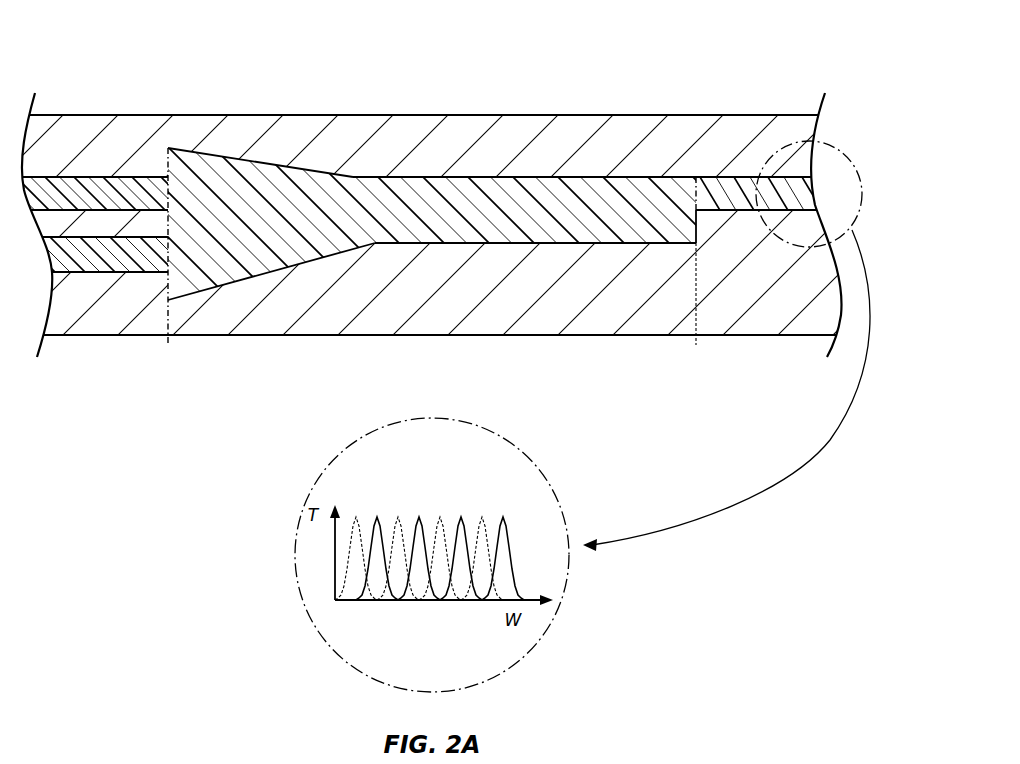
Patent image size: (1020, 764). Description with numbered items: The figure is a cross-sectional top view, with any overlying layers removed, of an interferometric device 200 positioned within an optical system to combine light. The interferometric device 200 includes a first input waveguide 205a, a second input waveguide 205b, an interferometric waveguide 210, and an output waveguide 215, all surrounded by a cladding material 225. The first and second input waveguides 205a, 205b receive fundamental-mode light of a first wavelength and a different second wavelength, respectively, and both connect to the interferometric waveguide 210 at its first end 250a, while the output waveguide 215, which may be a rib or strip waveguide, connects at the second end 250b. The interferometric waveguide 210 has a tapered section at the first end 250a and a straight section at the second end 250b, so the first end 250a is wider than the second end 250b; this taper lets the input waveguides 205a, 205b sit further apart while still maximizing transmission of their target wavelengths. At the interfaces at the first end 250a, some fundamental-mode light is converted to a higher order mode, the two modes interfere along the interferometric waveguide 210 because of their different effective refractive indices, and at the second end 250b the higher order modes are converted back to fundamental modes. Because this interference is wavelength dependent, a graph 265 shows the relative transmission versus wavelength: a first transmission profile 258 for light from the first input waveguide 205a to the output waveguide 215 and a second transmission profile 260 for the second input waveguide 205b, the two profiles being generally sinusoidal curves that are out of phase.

The interferometric device 200 is at (70, 47).
The first input waveguide 205a is at (97, 170).
The second input waveguide 205b is at (107, 273).
The interferometric waveguide 210 is at (168, 343).
The output waveguide 215 is at (754, 205).
The cladding material 225 is at (317, 133).
The first end 250a is at (168, 147).
The second end 250b is at (693, 193).
The first transmission profile 258 is at (398, 516).
The second transmission profile 260 is at (461, 516).
The graph 265 is at (858, 152).